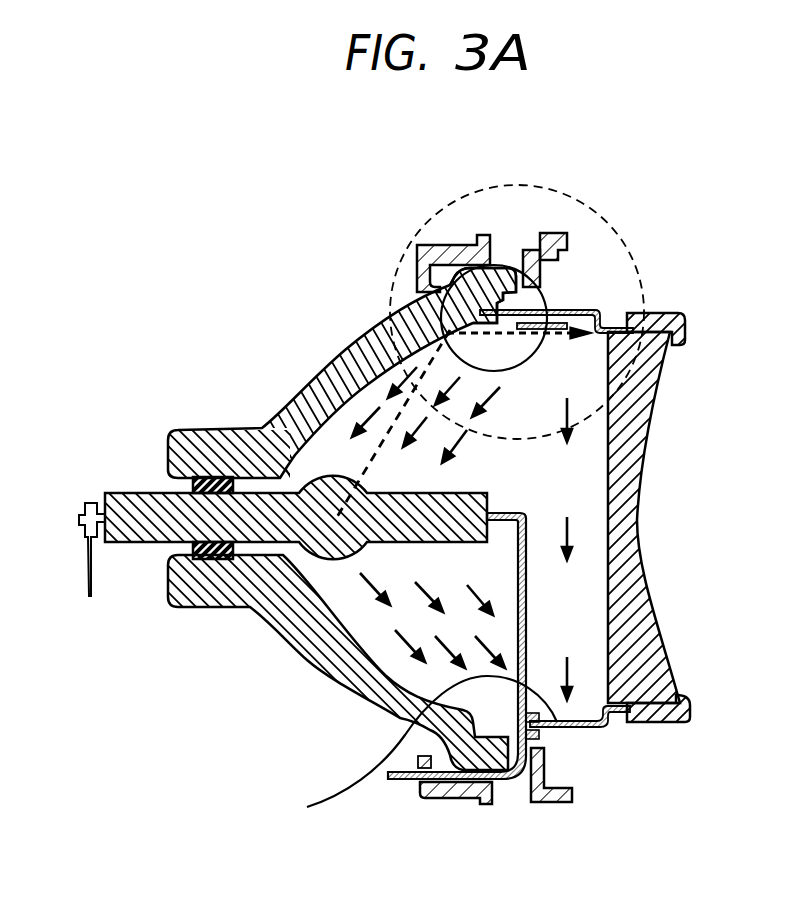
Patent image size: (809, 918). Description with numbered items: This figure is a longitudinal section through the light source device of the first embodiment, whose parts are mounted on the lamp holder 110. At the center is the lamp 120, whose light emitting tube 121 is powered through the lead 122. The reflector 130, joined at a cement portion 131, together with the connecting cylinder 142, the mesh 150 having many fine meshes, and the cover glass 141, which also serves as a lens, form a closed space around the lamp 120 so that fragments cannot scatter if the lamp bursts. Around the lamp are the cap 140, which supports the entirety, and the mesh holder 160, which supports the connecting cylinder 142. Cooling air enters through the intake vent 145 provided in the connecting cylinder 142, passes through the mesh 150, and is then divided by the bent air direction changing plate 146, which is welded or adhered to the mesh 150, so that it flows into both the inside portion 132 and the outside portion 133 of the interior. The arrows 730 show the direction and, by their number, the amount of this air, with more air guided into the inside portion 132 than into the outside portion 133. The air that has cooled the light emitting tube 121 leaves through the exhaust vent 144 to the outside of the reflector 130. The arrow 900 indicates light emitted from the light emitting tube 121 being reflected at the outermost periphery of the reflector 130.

The lamp holder 110 is at (458, 800).
The lamp 120 is at (457, 510).
The light emitting tube 121 is at (172, 458).
The lead 122 is at (527, 530).
The reflector 130 is at (270, 583).
The cement portion 131 is at (163, 566).
The inside portion of the interior of the light source device 132 is at (347, 597).
The outside portion of the interior of the light source device 133 is at (570, 577).
The cap 140 is at (677, 327).
The cover glass 141 is at (623, 557).
The connecting cylinder 142 is at (598, 314).
The exhaust vent 144 is at (560, 733).
The intake vent 145 is at (562, 303).
The air direction changing plate 146 is at (518, 297).
The mesh 150 is at (395, 330).
The mesh holder 160 is at (445, 325).
The arrow showing direction and amount of cooling air 730 is at (393, 393).
The arrow showing light reflecting in the outermost periphery of the reflector 900 is at (560, 336).